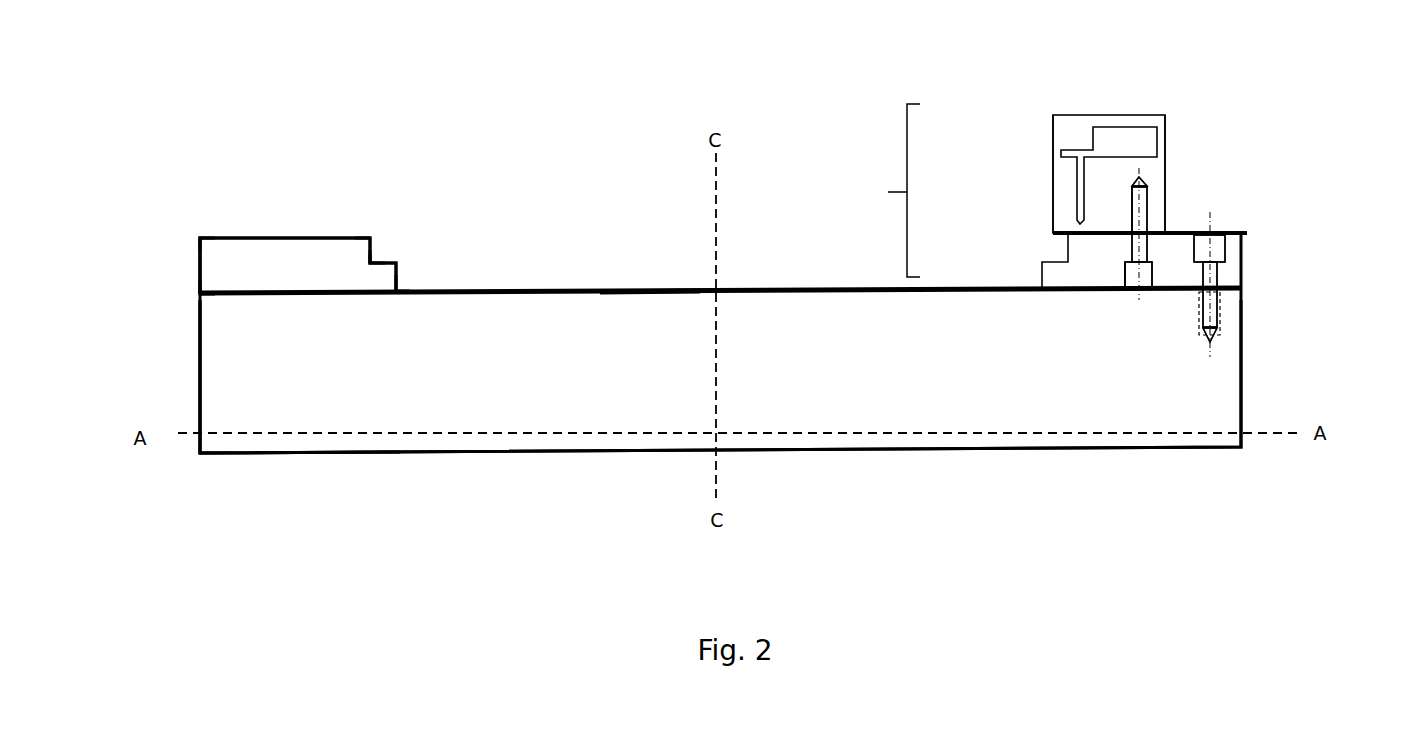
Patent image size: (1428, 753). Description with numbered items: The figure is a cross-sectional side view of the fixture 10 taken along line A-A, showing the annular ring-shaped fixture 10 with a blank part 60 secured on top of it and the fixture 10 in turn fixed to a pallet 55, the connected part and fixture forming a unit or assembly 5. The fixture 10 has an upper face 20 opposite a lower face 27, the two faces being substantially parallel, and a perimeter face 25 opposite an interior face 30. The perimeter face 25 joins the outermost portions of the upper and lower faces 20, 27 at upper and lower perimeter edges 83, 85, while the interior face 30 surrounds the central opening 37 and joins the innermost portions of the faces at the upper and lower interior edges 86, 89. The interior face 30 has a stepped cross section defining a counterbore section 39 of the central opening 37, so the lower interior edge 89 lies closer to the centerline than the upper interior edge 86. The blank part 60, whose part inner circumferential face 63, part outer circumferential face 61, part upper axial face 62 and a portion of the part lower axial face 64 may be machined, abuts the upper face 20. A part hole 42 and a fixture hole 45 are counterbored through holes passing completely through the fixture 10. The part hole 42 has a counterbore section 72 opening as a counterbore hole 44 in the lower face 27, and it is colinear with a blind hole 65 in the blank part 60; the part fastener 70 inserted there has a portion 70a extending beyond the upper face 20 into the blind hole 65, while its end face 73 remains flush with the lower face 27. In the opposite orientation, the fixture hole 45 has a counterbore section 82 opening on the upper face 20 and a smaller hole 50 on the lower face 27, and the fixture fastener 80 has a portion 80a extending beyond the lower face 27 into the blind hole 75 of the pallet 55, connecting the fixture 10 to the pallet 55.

The unit or assembly 5 is at (892, 190).
The fixture 10 is at (325, 227).
The upper face 20 is at (245, 238).
The perimeter face 25 is at (196, 260).
The lower face 27 is at (243, 302).
The interior face 30 is at (378, 254).
The central opening 37 is at (648, 265).
The counterbore section 39 is at (388, 254).
The part hole 42 is at (1138, 233).
The counterbore hole 44 is at (1127, 290).
The fixture hole 45 is at (1226, 230).
The smaller hole 50 is at (1218, 283).
The pallet 55 is at (796, 378).
The blank part 60 is at (1106, 188).
The part outer circumferential face 61 is at (1168, 148).
The part upper axial face 62 is at (1099, 113).
The part inner circumferential face 63 is at (1050, 148).
The part lower axial face 64 is at (1058, 225).
The blind hole 65 is at (1152, 185).
The part fastener 70 is at (1150, 213).
The fastener portion 70a is at (1150, 200).
The counterbore section 72 is at (1120, 268).
The end face 73 is at (1127, 283).
The blind hole 75 is at (1218, 338).
The fixture fastener 80 is at (1218, 305).
The fastener portion 80a is at (1218, 318).
The counterbore section 82 is at (1223, 248).
The upper perimeter edge 83 is at (199, 237).
The lower perimeter edge 85 is at (197, 293).
The upper interior edge 86 is at (373, 233).
The lower interior edge 89 is at (395, 297).